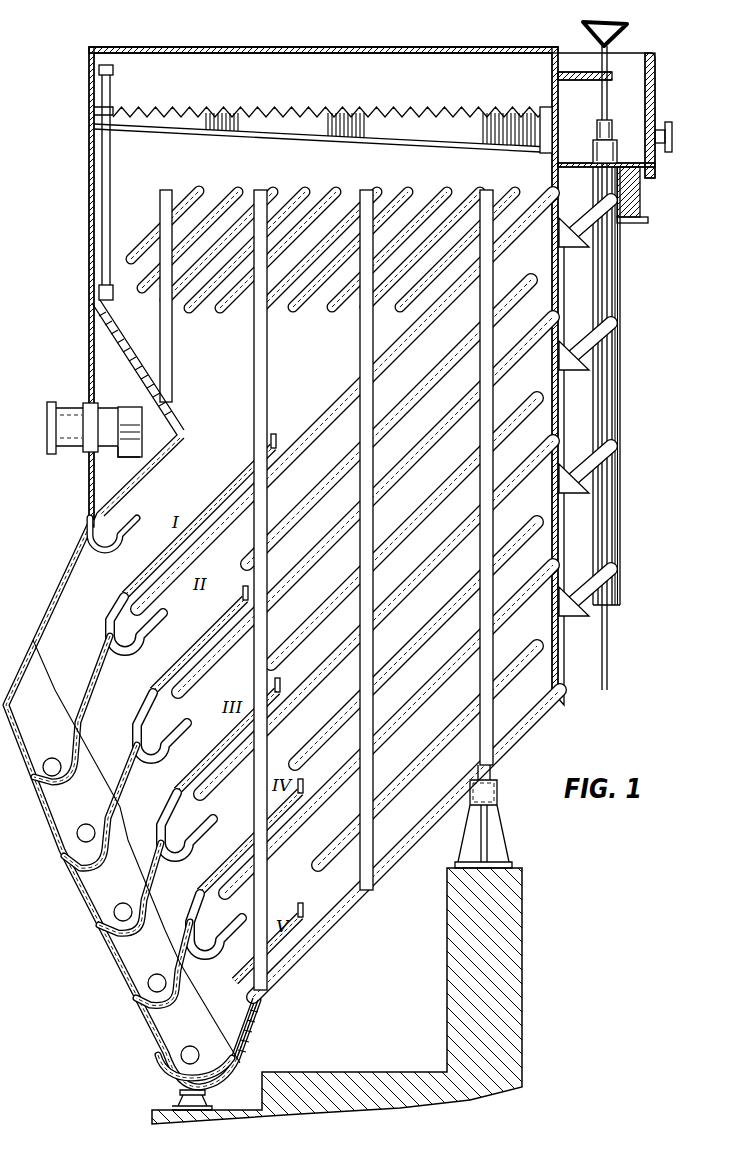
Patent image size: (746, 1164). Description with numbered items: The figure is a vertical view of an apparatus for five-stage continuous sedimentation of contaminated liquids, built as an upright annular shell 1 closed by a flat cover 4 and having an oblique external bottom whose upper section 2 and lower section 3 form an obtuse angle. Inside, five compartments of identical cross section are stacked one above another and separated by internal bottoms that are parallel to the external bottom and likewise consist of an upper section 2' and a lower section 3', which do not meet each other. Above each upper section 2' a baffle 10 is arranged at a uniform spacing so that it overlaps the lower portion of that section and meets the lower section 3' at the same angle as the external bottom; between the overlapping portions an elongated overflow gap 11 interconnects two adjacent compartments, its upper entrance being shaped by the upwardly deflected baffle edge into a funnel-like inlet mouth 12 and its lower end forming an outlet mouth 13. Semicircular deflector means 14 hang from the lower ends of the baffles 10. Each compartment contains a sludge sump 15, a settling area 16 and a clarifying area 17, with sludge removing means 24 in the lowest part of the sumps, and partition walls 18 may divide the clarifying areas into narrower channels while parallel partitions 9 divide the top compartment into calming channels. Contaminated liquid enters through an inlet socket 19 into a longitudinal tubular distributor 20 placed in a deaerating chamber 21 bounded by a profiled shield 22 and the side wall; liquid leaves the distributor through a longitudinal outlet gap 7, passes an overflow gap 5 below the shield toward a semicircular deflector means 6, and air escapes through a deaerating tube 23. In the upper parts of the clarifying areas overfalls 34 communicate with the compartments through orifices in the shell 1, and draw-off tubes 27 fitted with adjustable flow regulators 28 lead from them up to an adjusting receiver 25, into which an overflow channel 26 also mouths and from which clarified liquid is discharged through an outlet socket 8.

The upright annular shell 1 is at (89, 240).
The upper section of external bottom 2 is at (406, 843).
The upper sections of internal bottoms 2' is at (365, 605).
The lower section of external bottom 3 is at (259, 1028).
The lower sections of internal bottoms 3' is at (136, 850).
The flat cover 4 is at (336, 48).
The overflow gap 5 is at (97, 517).
The semicircular deflector means 6 is at (124, 540).
The longitudinal outlet gap 7 is at (121, 460).
The outlet socket 8 is at (671, 140).
The parallel partitions 9 is at (190, 312).
The baffles 10 is at (248, 492).
The overflow gap 11 is at (200, 530).
The funnel-like inlet mouth 12 is at (225, 628).
The outlet mouth 13 is at (187, 668).
The semicircular deflector means 14 is at (170, 738).
The sludge sumps 15 is at (118, 726).
The settling areas 16 is at (221, 717).
The clarifying areas 17 is at (535, 397).
The partition walls 18 is at (334, 480).
The inlet socket 19 is at (47, 412).
The longitudinal tubular distributor 20 is at (128, 413).
The deaerating chamber 21 is at (125, 475).
The profiled shield 22 is at (166, 445).
The deaerating tube 23 is at (103, 190).
The sludge removing means 24 is at (52, 758).
The adjusting receiver 25 is at (640, 98).
The overflow channel 26 is at (350, 117).
The draw-off tubes 27 is at (610, 268).
The adjustable flow regulators 28 is at (596, 152).
The overfalls 34 is at (583, 608).